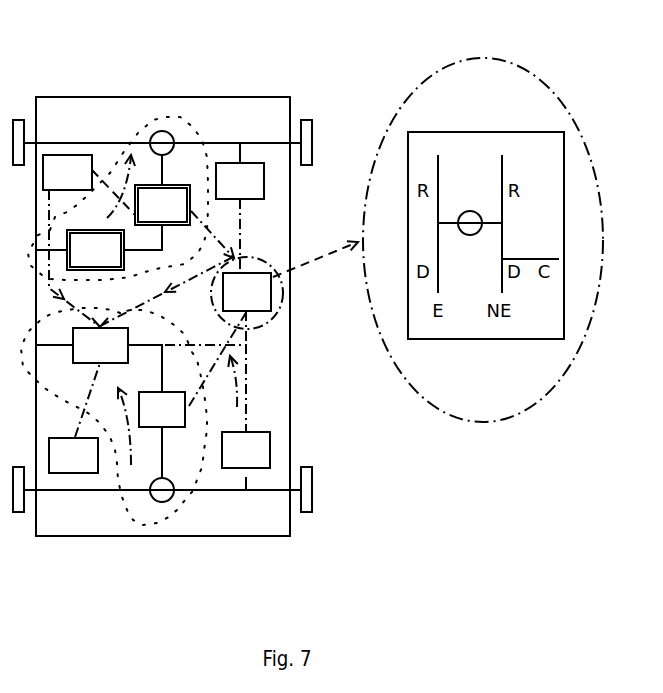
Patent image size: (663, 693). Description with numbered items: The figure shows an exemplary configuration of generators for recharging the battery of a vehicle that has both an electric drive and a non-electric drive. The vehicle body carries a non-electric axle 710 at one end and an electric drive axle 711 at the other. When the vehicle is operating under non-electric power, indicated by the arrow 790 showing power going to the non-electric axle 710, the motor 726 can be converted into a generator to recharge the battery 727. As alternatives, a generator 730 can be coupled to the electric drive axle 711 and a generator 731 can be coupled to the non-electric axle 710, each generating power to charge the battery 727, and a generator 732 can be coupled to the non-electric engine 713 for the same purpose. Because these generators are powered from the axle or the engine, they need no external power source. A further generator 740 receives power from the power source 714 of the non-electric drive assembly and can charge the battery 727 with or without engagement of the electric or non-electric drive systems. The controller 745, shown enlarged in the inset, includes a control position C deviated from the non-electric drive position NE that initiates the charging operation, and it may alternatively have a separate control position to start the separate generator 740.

The non-electric axle 710 is at (222, 143).
The electric drive axle 711 is at (247, 490).
The non-electric engine 713 is at (184, 221).
The power source 714 is at (95, 250).
The motor 726 is at (182, 388).
The battery 727 is at (159, 371).
The generator 730 is at (246, 450).
The generator 731 is at (240, 218).
The generator 732 is at (89, 241).
The generator 740 is at (74, 418).
The controller 745 is at (230, 285).
The arrow 790 is at (128, 202).